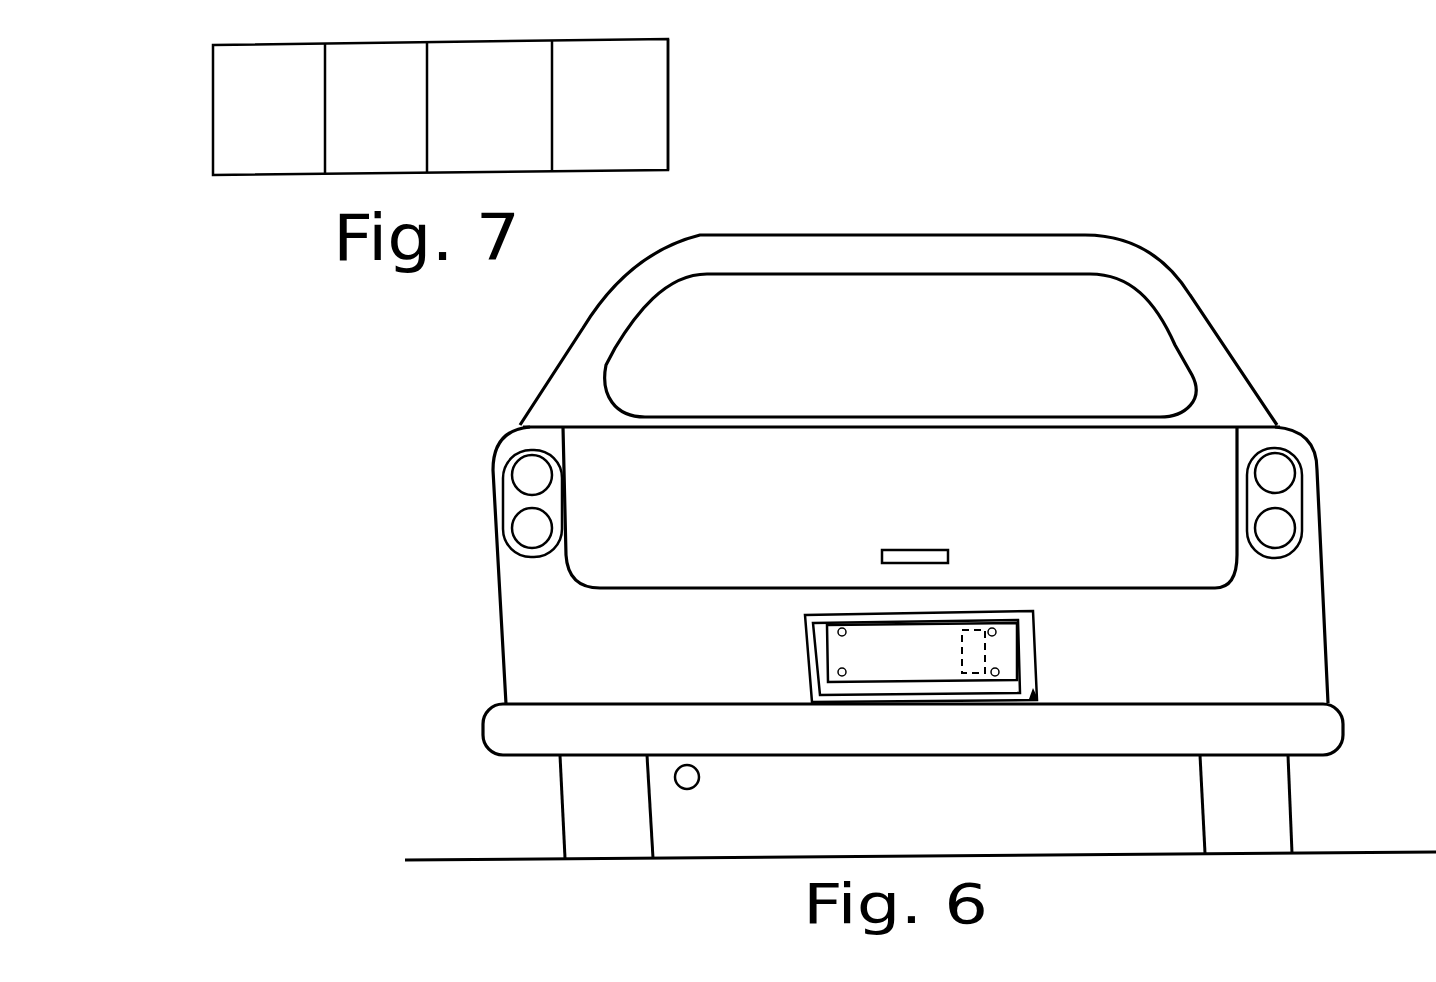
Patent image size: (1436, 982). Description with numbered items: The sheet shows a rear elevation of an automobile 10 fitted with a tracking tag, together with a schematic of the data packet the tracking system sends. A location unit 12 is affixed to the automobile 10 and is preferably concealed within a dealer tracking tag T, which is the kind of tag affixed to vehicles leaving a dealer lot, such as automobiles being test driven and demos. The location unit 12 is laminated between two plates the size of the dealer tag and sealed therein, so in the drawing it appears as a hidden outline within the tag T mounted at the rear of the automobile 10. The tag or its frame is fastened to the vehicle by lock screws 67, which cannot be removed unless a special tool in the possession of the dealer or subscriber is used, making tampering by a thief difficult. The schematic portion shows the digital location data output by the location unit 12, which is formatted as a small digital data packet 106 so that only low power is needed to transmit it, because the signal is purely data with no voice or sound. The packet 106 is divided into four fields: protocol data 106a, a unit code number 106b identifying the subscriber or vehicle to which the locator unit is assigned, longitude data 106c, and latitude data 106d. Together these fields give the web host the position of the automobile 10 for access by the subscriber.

In FIG. 6, the automobile 10 is at (1203, 301).
In FIG. 6, the location unit 12 is at (992, 660).
In FIG. 6, the lock screws 67 is at (838, 632).
In FIG. 6, the dealer tracking tag T is at (1042, 643).
In FIG. 7, the digital data packet 106 is at (506, 115).
In FIG. 7, the protocol data 106a is at (275, 109).
In FIG. 7, the unit code number 106b is at (381, 108).
In FIG. 7, the longitude data 106c is at (496, 106).
In FIG. 7, the latitude data 106d is at (616, 104).